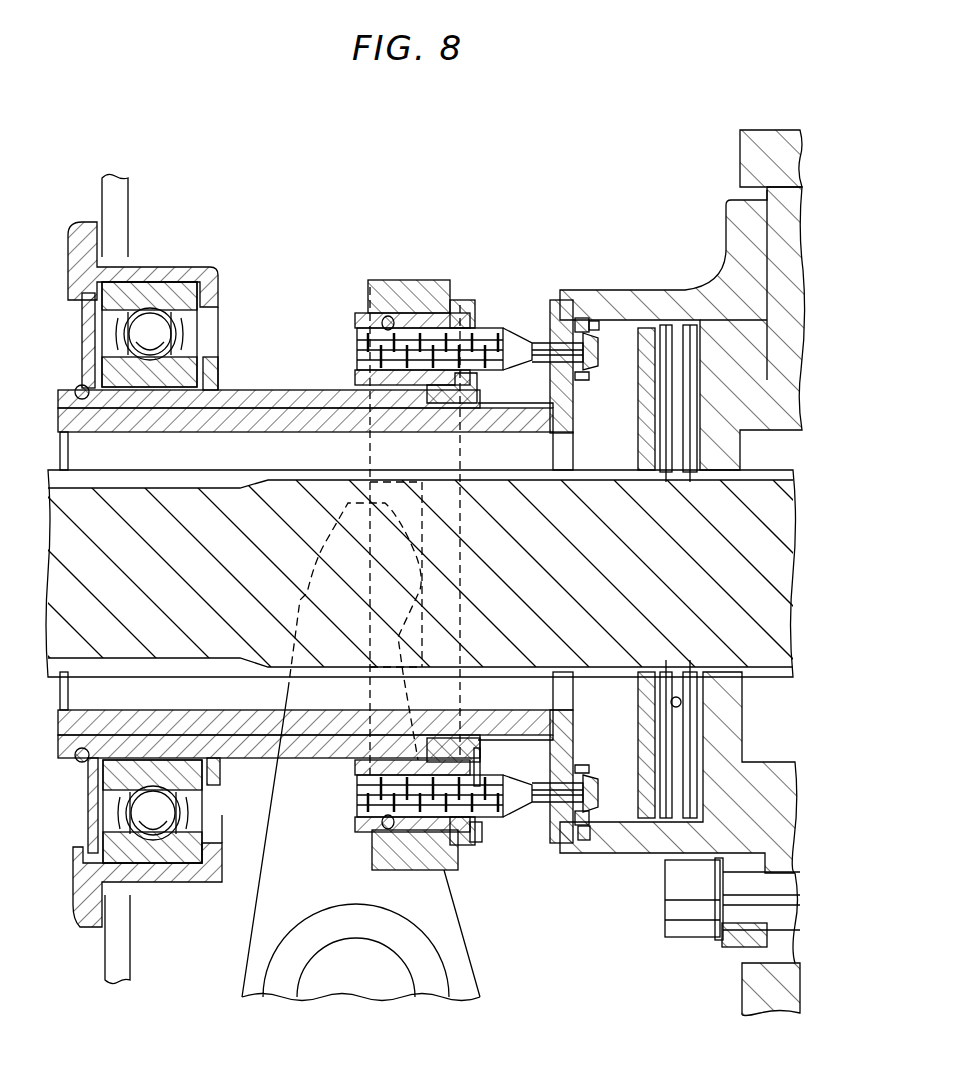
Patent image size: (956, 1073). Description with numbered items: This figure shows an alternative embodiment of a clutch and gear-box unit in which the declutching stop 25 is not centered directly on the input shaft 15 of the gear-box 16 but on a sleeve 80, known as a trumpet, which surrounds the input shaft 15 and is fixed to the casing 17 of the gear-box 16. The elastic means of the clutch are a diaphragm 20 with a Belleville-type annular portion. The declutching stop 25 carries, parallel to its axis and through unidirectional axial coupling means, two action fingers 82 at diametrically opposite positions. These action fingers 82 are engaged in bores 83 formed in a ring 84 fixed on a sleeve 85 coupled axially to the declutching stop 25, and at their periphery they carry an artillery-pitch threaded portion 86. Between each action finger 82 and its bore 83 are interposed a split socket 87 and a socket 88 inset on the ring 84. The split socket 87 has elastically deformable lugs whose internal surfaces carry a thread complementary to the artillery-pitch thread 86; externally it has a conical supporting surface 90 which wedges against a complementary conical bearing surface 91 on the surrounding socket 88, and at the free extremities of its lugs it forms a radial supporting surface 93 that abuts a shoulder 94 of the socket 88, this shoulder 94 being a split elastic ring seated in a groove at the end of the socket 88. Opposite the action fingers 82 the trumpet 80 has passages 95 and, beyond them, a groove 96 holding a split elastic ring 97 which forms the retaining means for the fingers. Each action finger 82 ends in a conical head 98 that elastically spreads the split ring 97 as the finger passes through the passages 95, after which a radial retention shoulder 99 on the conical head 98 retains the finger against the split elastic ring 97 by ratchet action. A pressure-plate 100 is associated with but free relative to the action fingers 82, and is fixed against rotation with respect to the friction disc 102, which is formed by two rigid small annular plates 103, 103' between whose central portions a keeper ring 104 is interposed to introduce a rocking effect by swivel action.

The shaft 15 is at (318, 470).
The gear-box 16 is at (748, 125).
The casing 17 is at (765, 225).
The diaphragm 20 is at (128, 205).
The declutching stop 25 is at (225, 268).
The sleeve (trumpet) 80 is at (270, 404).
The action fingers 82 is at (521, 325).
The bores 83 is at (392, 328).
The ring 84 is at (415, 278).
The sleeve 85 is at (236, 388).
The artillery-pitch threaded portion 86 is at (492, 330).
The split socket 87 is at (383, 373).
The socket 88 is at (468, 408).
The conical supporting surface 90 is at (475, 378).
The conical bearing surface 91 is at (456, 318).
The radial supporting surface 93 is at (481, 765).
The shoulder 94 is at (482, 836).
The passages 95 is at (562, 328).
The groove 96 is at (592, 322).
The split elastic ring 97 is at (586, 840).
The conical head 98 is at (587, 358).
The pin 99 is at (585, 374).
The pressure-plate 100 is at (664, 866).
The friction disc 102 is at (706, 720).
The small annular plate 103 is at (637, 571).
The small annular plate 103' is at (694, 571).
The keeper ring 104 is at (670, 702).